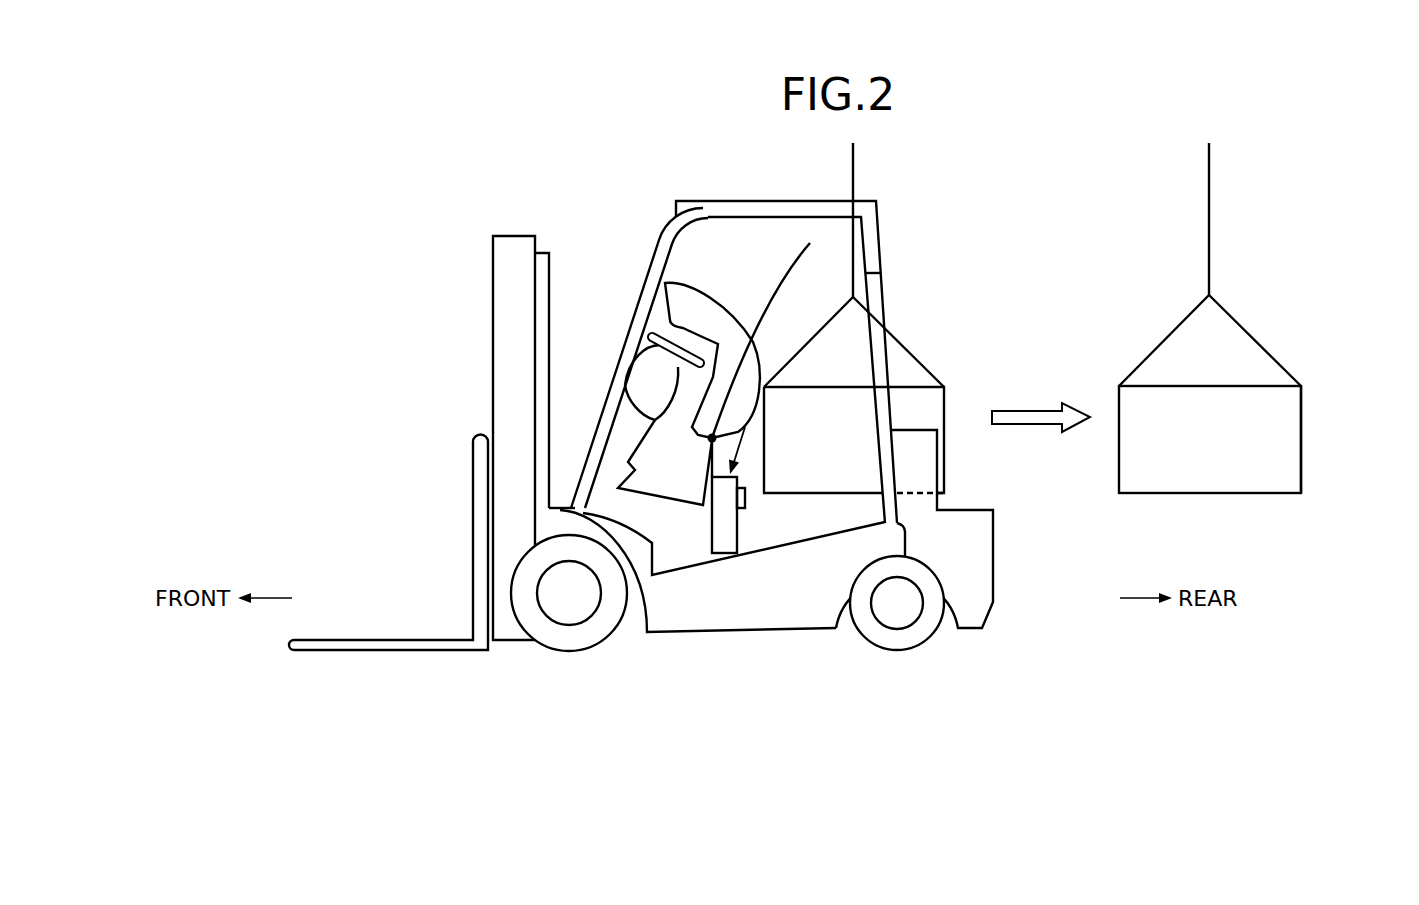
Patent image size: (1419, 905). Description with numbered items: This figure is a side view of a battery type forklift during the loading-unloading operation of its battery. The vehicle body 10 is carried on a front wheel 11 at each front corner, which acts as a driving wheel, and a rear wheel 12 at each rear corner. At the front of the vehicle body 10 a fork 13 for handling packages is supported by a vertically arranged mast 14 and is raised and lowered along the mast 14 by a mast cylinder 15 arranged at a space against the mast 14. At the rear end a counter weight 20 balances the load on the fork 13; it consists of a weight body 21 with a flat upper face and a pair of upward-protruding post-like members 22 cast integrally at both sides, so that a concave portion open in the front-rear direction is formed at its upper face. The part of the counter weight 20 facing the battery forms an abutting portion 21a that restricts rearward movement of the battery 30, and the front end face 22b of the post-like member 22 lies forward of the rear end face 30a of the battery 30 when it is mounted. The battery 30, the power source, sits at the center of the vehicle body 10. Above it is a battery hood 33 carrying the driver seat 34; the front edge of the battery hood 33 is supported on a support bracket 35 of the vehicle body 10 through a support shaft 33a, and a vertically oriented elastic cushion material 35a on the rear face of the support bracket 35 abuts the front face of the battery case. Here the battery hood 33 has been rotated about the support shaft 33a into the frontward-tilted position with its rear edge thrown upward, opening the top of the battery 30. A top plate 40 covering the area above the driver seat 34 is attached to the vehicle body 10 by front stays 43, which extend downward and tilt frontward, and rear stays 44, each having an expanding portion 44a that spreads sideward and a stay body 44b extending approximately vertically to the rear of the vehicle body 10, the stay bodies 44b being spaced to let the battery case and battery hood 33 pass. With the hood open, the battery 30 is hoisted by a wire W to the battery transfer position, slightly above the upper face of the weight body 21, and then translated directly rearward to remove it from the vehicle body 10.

The vehicle body 10 is at (764, 629).
The front wheel 11 is at (556, 643).
The rear wheel 12 is at (884, 639).
The fork 13 is at (350, 638).
The mast 14 is at (493, 291).
The mast cylinder 15 is at (549, 291).
The counter weight 20 is at (1058, 448).
The weight body 21 is at (983, 539).
The abutting portion 21a is at (957, 510).
The post-like member 22 is at (926, 462).
The front end face of the post-like member 22b is at (880, 452).
The battery 30 is at (935, 404).
The rear end face of the battery 30a is at (1308, 452).
The battery hood 33 is at (777, 287).
The support shaft 33a is at (709, 443).
The driver seat 34 is at (693, 305).
The support bracket 35 is at (717, 536).
The cushion material 35a is at (747, 497).
The top plate 40 is at (819, 201).
The front stay 43 is at (658, 250).
The rear stay 44 is at (962, 222).
The expanding portion 44a is at (874, 240).
The stay body 44b is at (874, 296).
The wire W is at (853, 167).